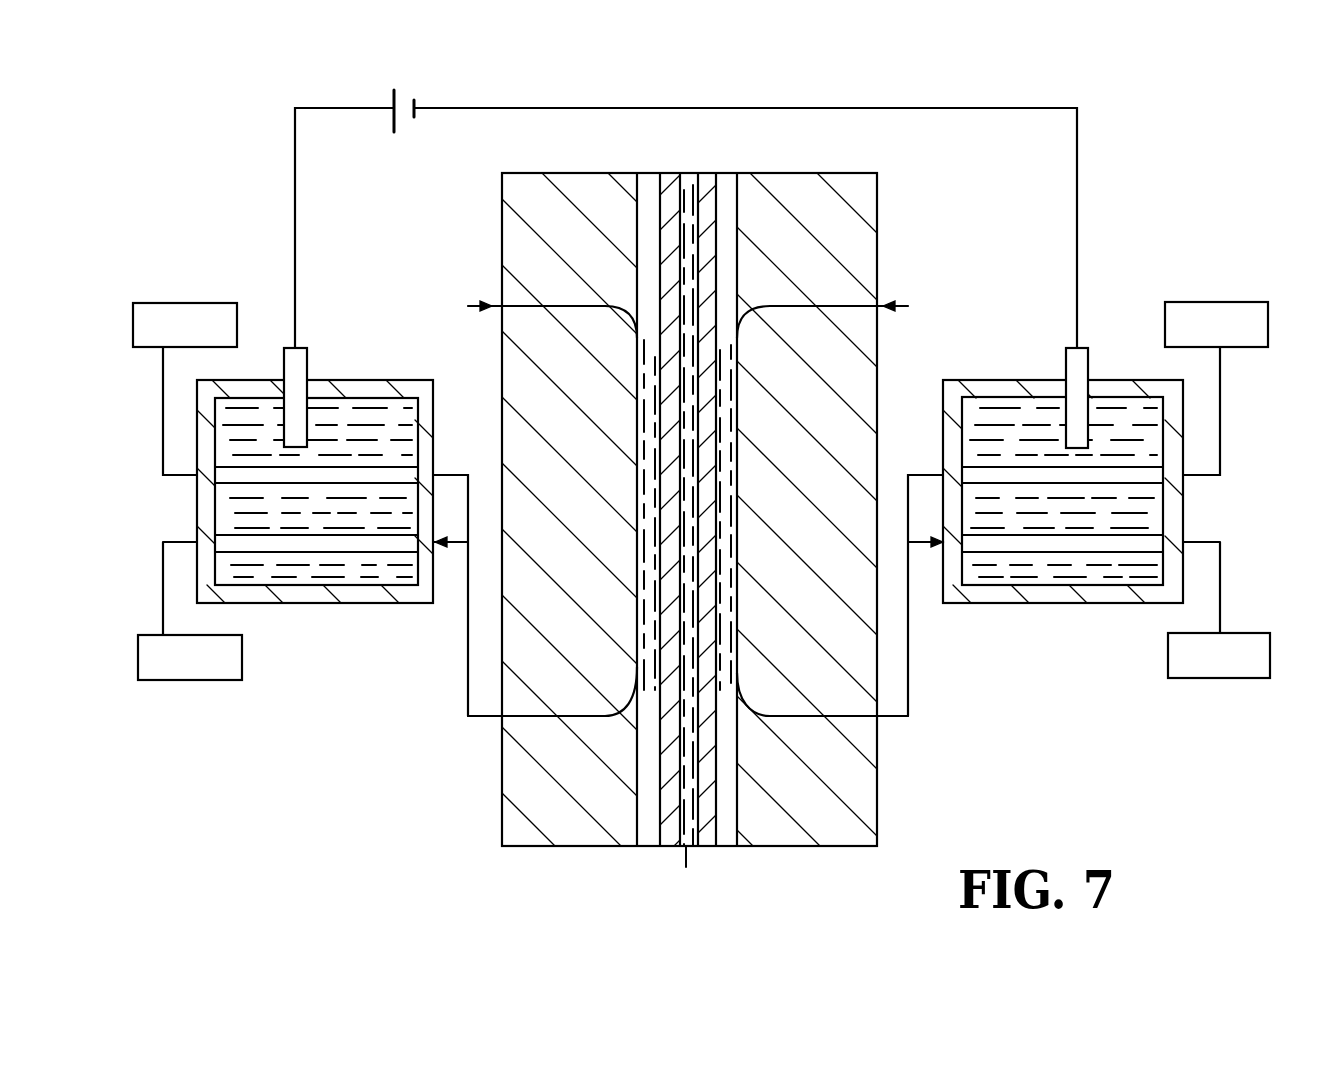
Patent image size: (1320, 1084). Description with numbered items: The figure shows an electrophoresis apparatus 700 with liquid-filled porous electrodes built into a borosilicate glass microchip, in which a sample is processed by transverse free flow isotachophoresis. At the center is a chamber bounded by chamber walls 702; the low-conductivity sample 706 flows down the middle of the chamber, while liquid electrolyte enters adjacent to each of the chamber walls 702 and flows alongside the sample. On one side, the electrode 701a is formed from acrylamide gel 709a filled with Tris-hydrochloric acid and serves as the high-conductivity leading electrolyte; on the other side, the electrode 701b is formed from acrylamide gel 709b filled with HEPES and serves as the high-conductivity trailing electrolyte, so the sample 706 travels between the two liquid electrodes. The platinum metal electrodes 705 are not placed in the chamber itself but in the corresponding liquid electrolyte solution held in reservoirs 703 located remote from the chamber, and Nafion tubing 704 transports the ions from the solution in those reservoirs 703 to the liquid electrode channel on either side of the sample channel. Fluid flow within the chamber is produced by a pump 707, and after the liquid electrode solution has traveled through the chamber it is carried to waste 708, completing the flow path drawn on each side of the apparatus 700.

The electrophoresis apparatus 700 is at (1122, 186).
The electrode 701a is at (655, 478).
The electrode 701b is at (730, 545).
The chamber walls 702 is at (727, 200).
The reservoirs 703 is at (368, 603).
The Nafion tubing 704 is at (277, 543).
The platinum metal electrodes 705 is at (307, 368).
The sample 706 is at (680, 860).
The pump 707 is at (215, 339).
The waste 708 is at (217, 673).
The acrylamide gel 709a is at (670, 805).
The acrylamide gel 709b is at (710, 805).